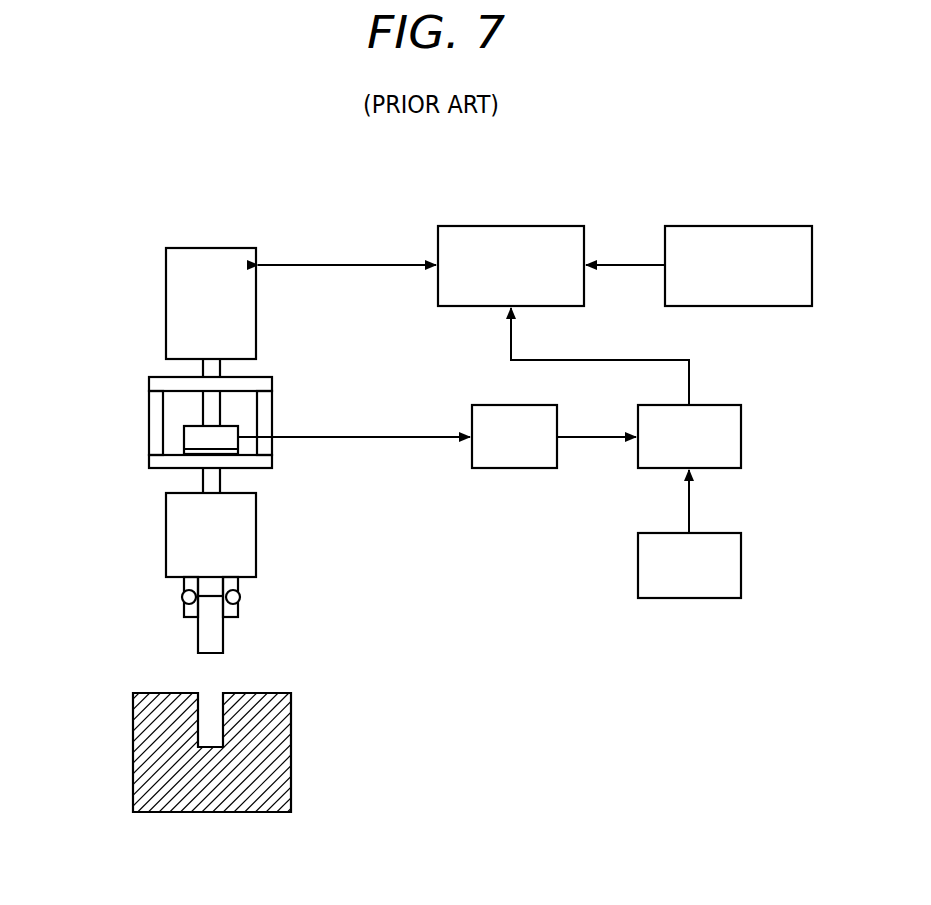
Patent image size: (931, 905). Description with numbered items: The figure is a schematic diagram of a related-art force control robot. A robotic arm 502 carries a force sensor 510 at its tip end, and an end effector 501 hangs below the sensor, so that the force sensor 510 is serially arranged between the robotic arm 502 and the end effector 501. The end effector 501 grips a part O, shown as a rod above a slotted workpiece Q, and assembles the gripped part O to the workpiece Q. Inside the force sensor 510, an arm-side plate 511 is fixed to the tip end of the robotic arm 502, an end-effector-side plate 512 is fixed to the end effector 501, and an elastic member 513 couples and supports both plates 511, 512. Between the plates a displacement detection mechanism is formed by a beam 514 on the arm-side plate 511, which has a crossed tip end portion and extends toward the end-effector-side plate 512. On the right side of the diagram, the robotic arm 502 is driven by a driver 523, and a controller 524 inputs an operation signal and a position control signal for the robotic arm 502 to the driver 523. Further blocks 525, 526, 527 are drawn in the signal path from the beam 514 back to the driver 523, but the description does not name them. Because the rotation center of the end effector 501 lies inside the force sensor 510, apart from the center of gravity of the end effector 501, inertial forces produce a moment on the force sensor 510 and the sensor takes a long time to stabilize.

The end effector 501 is at (166, 520).
The robotic arm 502 is at (166, 272).
The force sensor 510 is at (203, 427).
The arm-side plate 511 is at (274, 380).
The end-effector-side plate 512 is at (272, 462).
The elastic member 513 is at (272, 411).
The beam 514 is at (190, 437).
The driver 523 is at (540, 226).
The controller 524 is at (767, 226).
The amplifier 525 is at (513, 468).
The reference value setter 526 is at (741, 558).
The comparator 527 is at (741, 432).
The part O is at (223, 633).
The workpiece Q is at (167, 693).